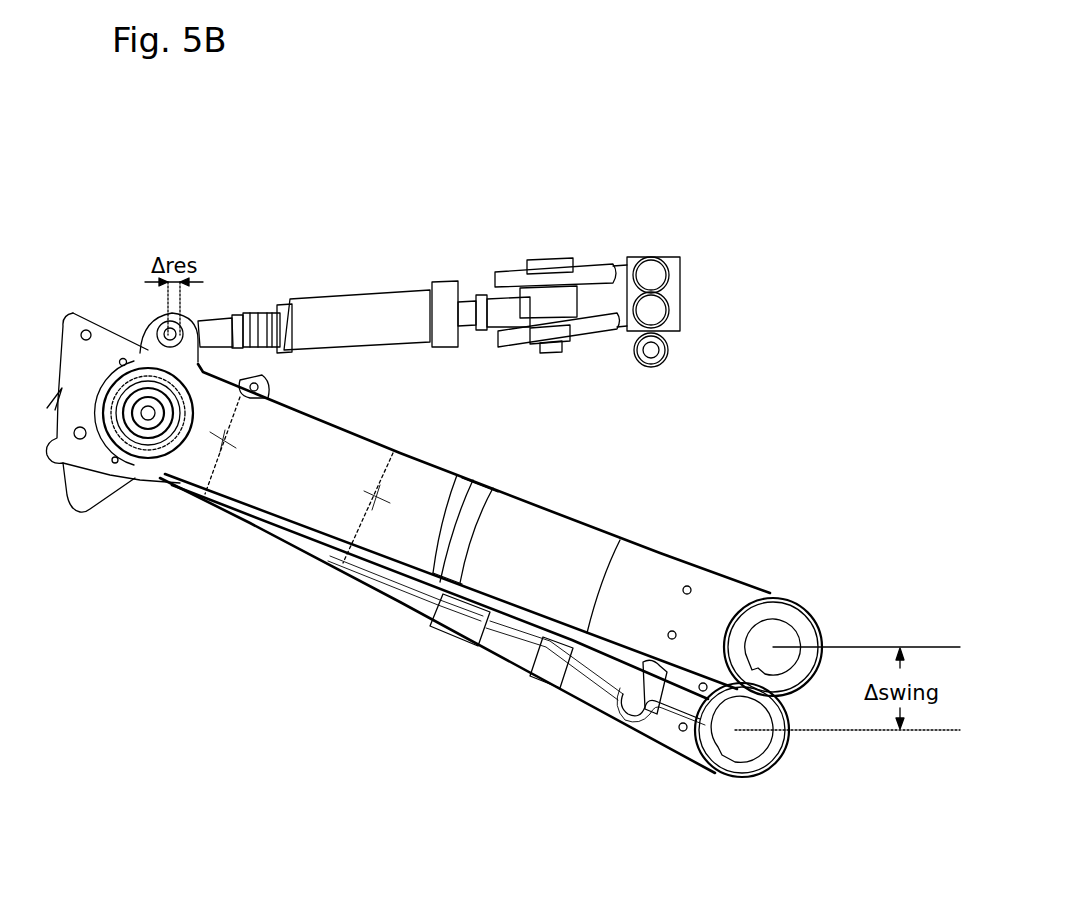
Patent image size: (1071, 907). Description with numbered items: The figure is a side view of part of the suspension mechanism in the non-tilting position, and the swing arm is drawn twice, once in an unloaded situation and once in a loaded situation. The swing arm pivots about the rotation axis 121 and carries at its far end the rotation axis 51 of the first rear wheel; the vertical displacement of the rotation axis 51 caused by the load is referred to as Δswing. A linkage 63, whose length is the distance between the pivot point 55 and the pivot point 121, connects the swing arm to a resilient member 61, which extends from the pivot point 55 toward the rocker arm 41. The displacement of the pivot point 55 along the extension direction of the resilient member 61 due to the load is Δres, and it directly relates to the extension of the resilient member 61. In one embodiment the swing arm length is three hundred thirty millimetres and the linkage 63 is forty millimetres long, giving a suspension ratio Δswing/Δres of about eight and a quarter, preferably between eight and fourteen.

The rocker arm 41 is at (550, 280).
The rotation axis 51 is at (773, 647).
The pivot point 55 is at (167, 322).
The resilient member 61 is at (345, 297).
The linkage 63 is at (150, 330).
The rotation axis 121 is at (148, 420).